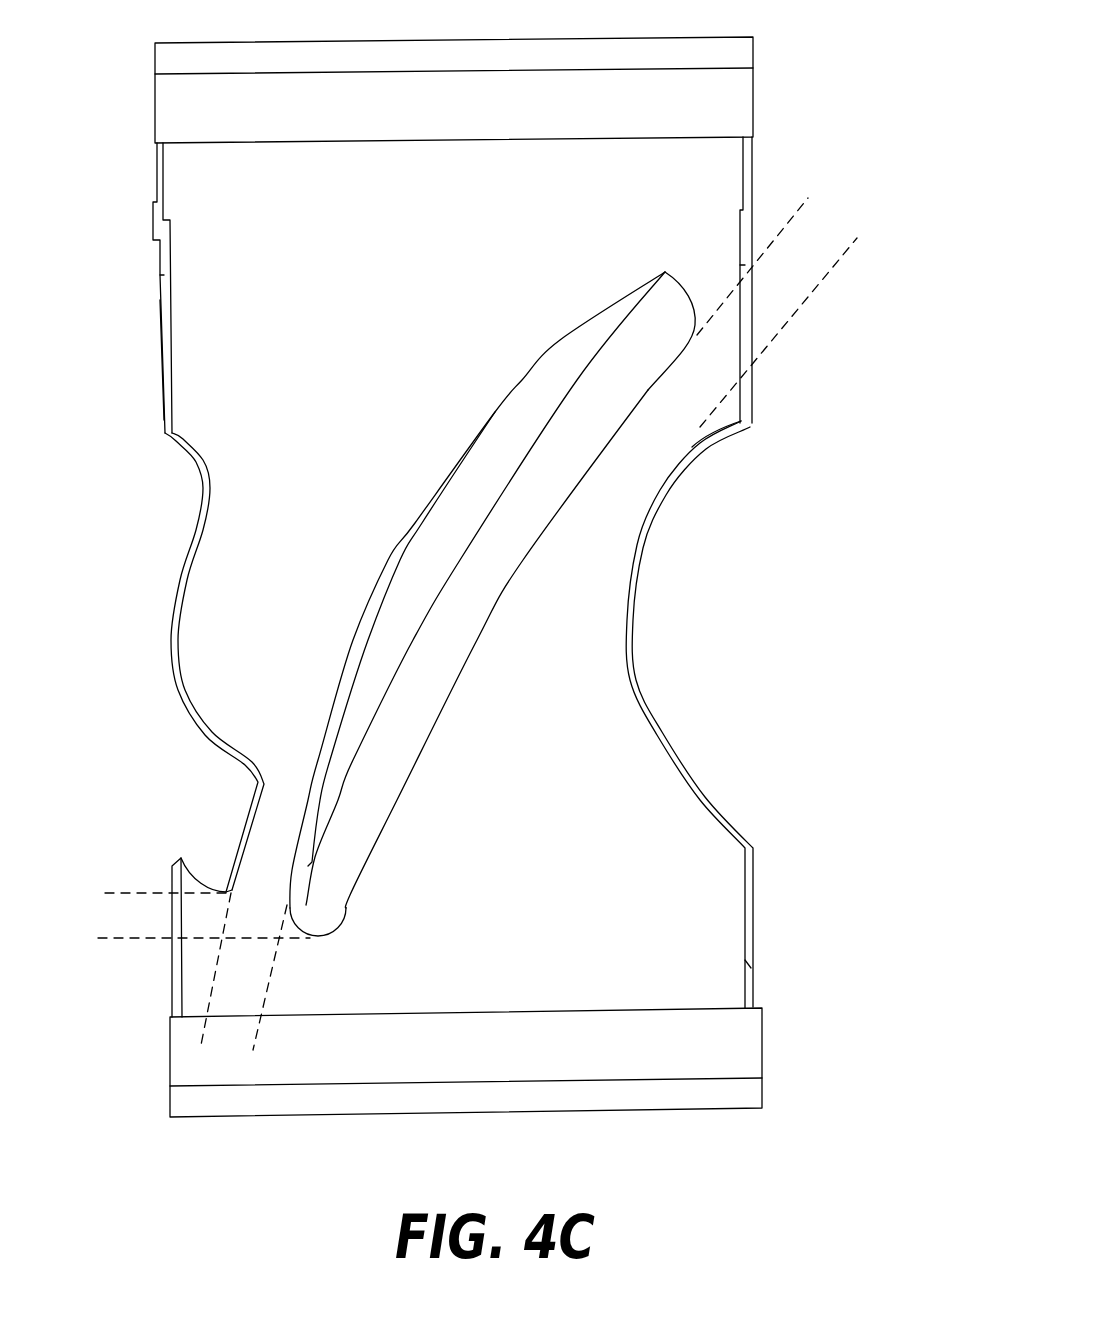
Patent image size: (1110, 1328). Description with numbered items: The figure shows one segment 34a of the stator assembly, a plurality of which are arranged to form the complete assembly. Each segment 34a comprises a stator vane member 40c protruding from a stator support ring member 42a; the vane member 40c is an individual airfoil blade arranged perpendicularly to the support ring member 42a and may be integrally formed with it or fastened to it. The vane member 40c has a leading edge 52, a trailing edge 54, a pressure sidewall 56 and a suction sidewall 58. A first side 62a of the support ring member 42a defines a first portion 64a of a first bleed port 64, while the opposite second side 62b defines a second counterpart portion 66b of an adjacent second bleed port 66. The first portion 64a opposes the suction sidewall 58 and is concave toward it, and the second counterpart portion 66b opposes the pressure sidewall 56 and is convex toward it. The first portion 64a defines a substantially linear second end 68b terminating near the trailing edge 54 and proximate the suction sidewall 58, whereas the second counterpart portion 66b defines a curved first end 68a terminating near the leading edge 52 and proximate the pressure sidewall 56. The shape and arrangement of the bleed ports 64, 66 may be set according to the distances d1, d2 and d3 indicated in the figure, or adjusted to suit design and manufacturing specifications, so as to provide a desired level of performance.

The segment 34a is at (655, 56).
The stator support ring member 42a is at (190, 178).
The first side 62a is at (76, 402).
The second side 62b is at (830, 362).
The first bleed port 64 is at (211, 725).
The first portion 64a is at (214, 645).
The second end 68b is at (264, 808).
The second bleed port 66 is at (688, 714).
The second counterpart portion 66b is at (655, 781).
The first end 68a is at (697, 446).
The stator vane member 40c is at (492, 569).
The leading edge 52 is at (674, 312).
The trailing edge 54 is at (304, 908).
The pressure sidewall 56 is at (440, 653).
The suction sidewall 58 is at (417, 527).
The distance d1 is at (826, 228).
The distance d2 is at (228, 1037).
The distance d3 is at (112, 913).